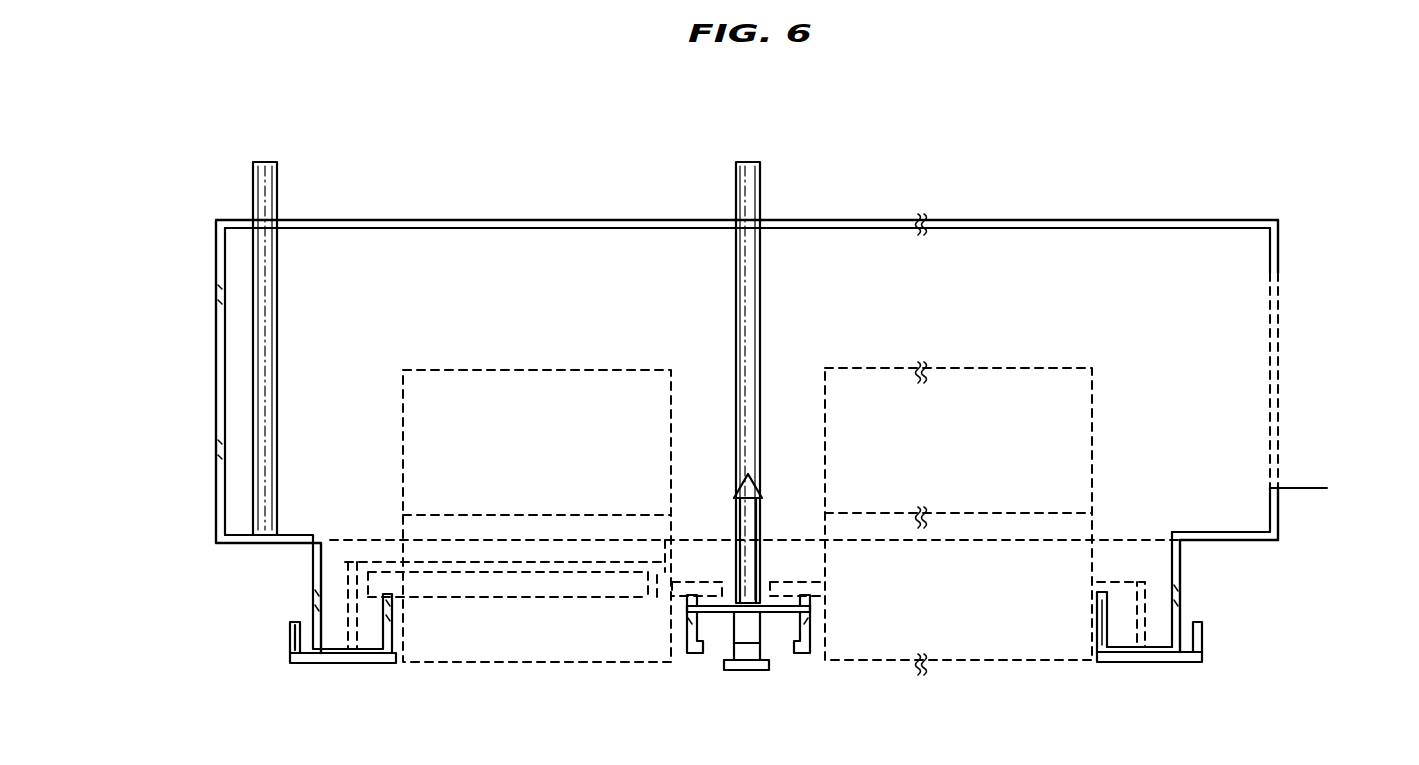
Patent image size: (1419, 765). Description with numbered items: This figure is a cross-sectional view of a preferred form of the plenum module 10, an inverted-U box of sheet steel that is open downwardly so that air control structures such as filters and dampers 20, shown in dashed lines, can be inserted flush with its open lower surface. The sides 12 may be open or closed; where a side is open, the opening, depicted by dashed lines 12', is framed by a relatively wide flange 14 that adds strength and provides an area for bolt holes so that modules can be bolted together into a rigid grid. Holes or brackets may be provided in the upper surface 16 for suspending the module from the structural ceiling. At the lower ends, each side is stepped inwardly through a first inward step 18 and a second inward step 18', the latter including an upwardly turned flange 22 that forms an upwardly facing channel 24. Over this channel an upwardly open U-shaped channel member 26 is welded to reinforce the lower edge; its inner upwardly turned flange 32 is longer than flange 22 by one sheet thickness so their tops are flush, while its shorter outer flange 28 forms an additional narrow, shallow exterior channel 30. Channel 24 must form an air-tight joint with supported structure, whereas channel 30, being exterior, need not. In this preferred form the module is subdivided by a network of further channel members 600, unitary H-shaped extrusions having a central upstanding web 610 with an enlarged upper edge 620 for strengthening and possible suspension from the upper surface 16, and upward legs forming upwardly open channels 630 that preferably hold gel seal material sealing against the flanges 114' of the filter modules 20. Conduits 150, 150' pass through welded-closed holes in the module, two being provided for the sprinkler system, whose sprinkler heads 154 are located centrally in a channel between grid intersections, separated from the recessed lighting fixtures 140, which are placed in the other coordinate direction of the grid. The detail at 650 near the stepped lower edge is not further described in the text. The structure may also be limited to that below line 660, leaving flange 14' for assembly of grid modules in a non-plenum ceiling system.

The plenum module 10 is at (1366, 290).
The sides 12 is at (186, 381).
The opening in side 12' is at (1316, 380).
The flange 14 is at (1312, 238).
The flange 14' is at (1260, 522).
The upper surface 16 is at (1068, 220).
The first inward step 18 is at (1243, 589).
The second inward step 18' is at (1172, 616).
The air control structures 20 is at (1092, 522).
The upwardly turned flange 22 is at (1118, 595).
The upwardly facing channel 24 is at (1162, 592).
The channel member 26 is at (1150, 663).
The upwardly turned flange 28 is at (1200, 655).
The additional channel 30 is at (1187, 632).
The upwardly turned flange 32 is at (1097, 625).
The flanges of filter modules 114' is at (698, 533).
The lighting fixtures 140 is at (488, 597).
The conduits 150 is at (230, 335).
The second post 150' is at (710, 365).
The sprinkler head 154 is at (752, 670).
The channel members 600 is at (693, 655).
The upstanding web 610 is at (757, 510).
The enlarged upper edge 620 is at (757, 473).
The upwardly open channels 630 is at (812, 590).
The hook 650 is at (345, 558).
The line 660 is at (1312, 488).